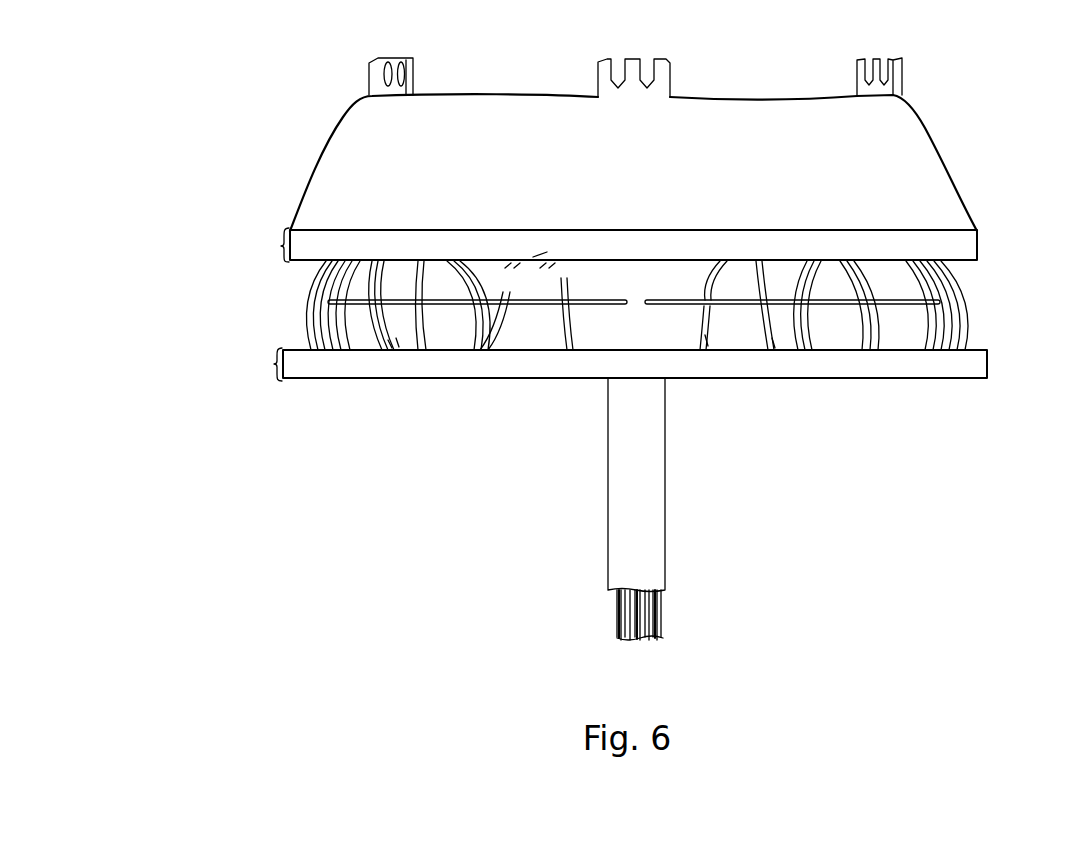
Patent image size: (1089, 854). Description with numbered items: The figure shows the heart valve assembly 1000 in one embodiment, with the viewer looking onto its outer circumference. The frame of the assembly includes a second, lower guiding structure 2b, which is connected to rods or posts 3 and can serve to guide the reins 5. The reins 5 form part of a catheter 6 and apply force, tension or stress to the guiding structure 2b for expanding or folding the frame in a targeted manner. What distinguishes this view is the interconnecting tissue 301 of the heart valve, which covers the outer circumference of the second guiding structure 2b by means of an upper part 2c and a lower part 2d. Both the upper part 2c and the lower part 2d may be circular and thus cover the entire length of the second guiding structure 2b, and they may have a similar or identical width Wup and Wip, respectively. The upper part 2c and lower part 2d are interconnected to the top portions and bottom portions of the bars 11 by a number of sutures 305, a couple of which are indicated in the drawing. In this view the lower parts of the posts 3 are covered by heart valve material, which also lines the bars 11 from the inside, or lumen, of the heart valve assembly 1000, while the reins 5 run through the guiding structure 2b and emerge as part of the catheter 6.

The heart valve assembly 1000 is at (324, 510).
The posts 3 is at (410, 82).
The upper part 2c is at (978, 242).
The lower part 2d is at (707, 360).
The second guiding structure 2b is at (283, 303).
The width of upper part Wup is at (282, 246).
The width of lower part Wip is at (275, 364).
The interconnecting tissue 301 is at (548, 293).
The sutures 305 is at (522, 249).
The bars 11 is at (497, 372).
The catheter 6 is at (597, 556).
The reins 5 is at (604, 633).